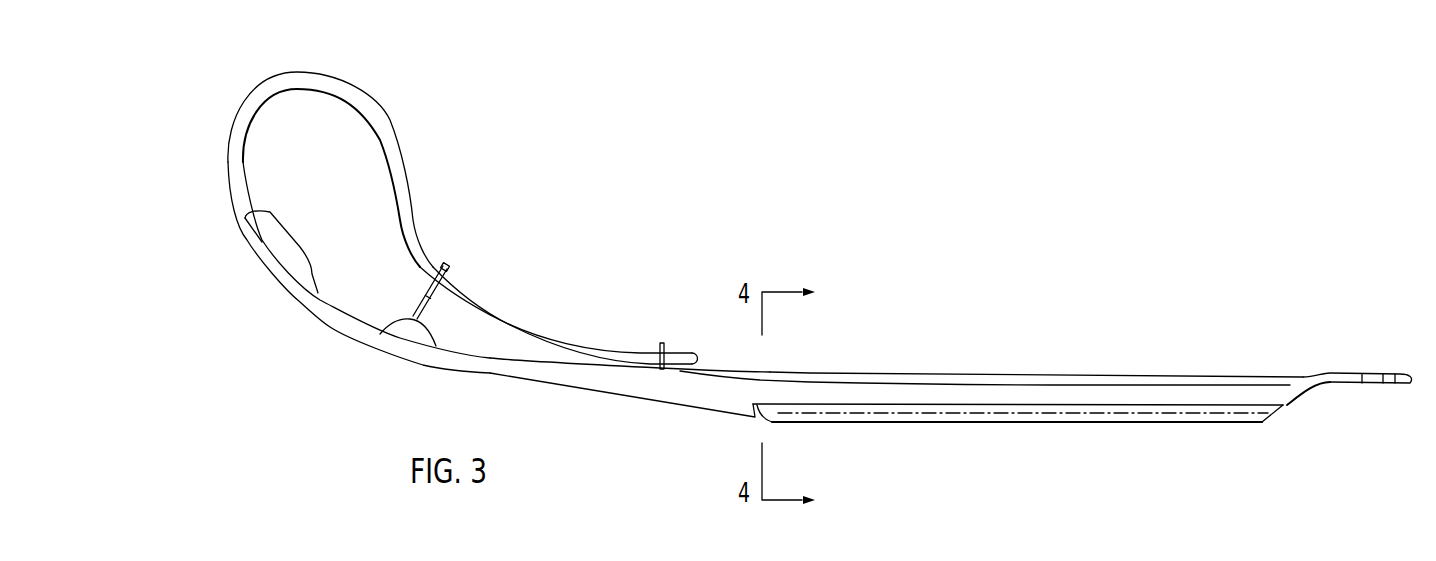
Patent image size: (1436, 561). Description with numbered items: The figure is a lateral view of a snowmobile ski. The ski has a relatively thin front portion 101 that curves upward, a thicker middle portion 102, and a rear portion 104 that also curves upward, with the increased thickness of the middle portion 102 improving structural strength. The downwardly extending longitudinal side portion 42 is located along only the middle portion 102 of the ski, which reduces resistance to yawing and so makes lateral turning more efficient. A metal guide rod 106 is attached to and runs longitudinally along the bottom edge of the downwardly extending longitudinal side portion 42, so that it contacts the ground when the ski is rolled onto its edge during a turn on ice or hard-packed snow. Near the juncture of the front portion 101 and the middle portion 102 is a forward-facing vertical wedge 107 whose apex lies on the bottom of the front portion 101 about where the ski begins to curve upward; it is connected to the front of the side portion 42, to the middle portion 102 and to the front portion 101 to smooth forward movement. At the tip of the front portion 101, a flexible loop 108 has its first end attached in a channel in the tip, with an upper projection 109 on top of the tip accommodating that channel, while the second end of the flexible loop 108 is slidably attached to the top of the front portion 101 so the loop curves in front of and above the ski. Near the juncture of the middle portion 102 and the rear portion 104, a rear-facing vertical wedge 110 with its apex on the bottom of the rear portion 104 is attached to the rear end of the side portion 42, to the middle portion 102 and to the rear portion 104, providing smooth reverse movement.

The front portion 101 is at (282, 320).
The middle portion 102 is at (1010, 288).
The rear portion 104 is at (1363, 336).
The guide rod 106 is at (958, 412).
The forward-facing vertical wedge 107 is at (660, 400).
The flexible loop 108 is at (402, 171).
The upper projection 109 is at (281, 250).
The rear-facing vertical wedge 110 is at (1293, 408).
The downwardly extending longitudinal side portion 42 is at (1103, 392).